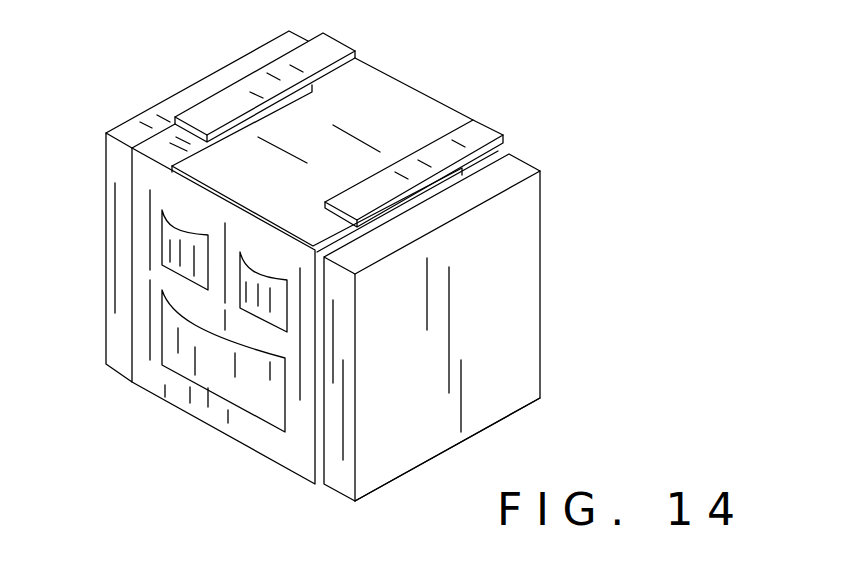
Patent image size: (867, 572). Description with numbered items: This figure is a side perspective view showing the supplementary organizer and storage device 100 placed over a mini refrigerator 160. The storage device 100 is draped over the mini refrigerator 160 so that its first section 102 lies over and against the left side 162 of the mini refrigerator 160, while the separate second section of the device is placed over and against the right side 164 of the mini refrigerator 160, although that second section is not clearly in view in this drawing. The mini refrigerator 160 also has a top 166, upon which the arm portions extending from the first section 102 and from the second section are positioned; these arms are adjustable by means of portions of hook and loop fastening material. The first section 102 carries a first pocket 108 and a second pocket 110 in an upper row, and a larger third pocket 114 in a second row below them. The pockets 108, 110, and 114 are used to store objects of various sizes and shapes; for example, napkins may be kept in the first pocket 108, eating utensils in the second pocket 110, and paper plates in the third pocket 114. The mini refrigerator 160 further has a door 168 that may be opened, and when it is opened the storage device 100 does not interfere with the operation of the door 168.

The supplementary organizer and storage device 100 is at (346, 277).
The first section 102 is at (166, 388).
The first pocket 108 is at (172, 240).
The second pocket 110 is at (282, 305).
The third pocket 114 is at (227, 373).
The mini refrigerator 160 is at (548, 247).
The left side 162 is at (118, 181).
The right side 164 is at (433, 103).
The top 166 is at (197, 92).
The door 168 is at (483, 403).